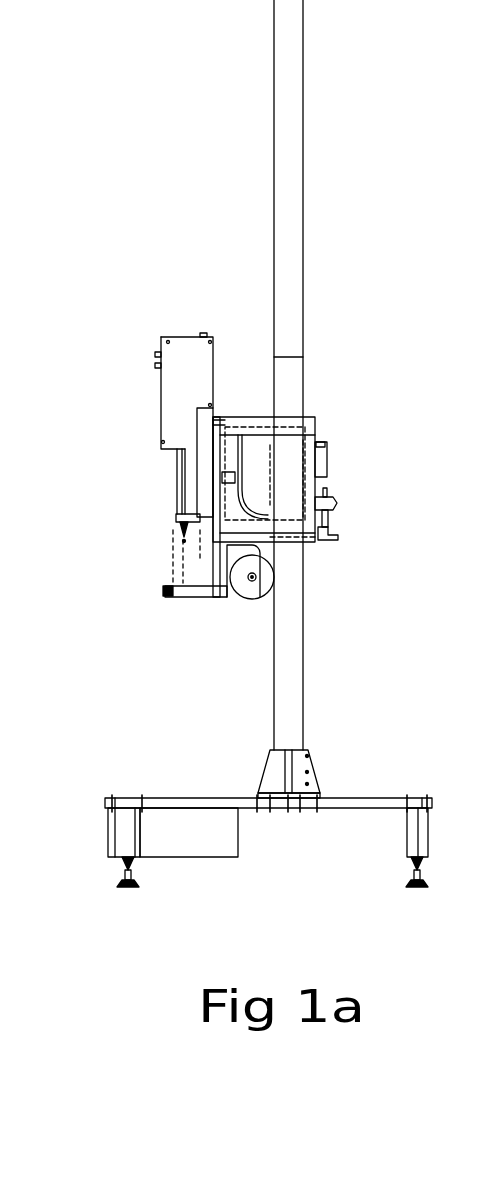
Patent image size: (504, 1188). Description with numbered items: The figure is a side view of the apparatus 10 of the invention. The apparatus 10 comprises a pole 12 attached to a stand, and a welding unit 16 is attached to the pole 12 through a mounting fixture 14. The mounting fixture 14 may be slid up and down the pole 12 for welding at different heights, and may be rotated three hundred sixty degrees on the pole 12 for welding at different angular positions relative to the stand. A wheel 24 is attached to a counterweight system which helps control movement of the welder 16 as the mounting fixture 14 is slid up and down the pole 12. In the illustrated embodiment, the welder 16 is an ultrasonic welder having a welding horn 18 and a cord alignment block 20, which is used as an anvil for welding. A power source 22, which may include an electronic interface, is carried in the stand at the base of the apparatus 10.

The apparatus 10 is at (91, 900).
The pole 12 is at (283, 692).
The mounting fixture 14 is at (302, 428).
The welding unit 16 is at (177, 403).
The welding horn 18 is at (183, 583).
The cord alignment block 20 is at (170, 590).
The power source 22 is at (195, 833).
The wheel 24 is at (262, 592).